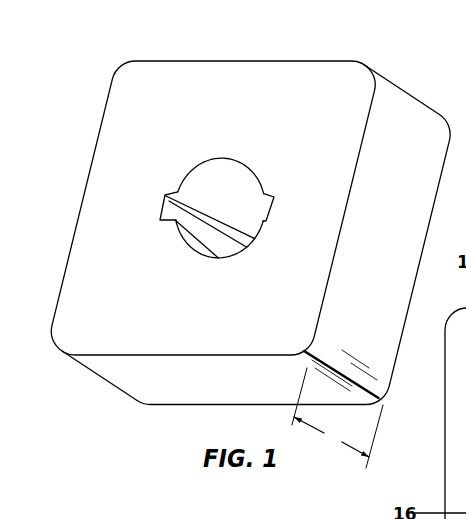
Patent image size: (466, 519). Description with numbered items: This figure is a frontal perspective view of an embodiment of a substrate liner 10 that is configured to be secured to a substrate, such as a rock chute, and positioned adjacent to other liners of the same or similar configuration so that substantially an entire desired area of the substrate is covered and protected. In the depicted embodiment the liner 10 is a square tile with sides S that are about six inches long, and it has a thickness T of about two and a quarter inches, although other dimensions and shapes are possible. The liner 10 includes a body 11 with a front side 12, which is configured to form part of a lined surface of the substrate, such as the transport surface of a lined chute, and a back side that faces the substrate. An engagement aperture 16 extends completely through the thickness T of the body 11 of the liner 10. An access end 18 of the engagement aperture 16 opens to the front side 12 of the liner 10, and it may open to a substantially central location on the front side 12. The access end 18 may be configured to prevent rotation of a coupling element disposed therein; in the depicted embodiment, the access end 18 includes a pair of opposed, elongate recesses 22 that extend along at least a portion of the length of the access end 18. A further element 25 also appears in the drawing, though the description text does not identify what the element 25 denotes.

The cutting insert 10 is at (107, 62).
The side surface 11 is at (390, 110).
The top surface 12 is at (208, 80).
The through hole 16 is at (182, 176).
The hole bore 18 is at (225, 185).
The key slot 22 is at (270, 209).
The insert thickness T is at (337, 418).
The adjacent figure element 25 is at (465, 377).
The surface S is at (445, 459).